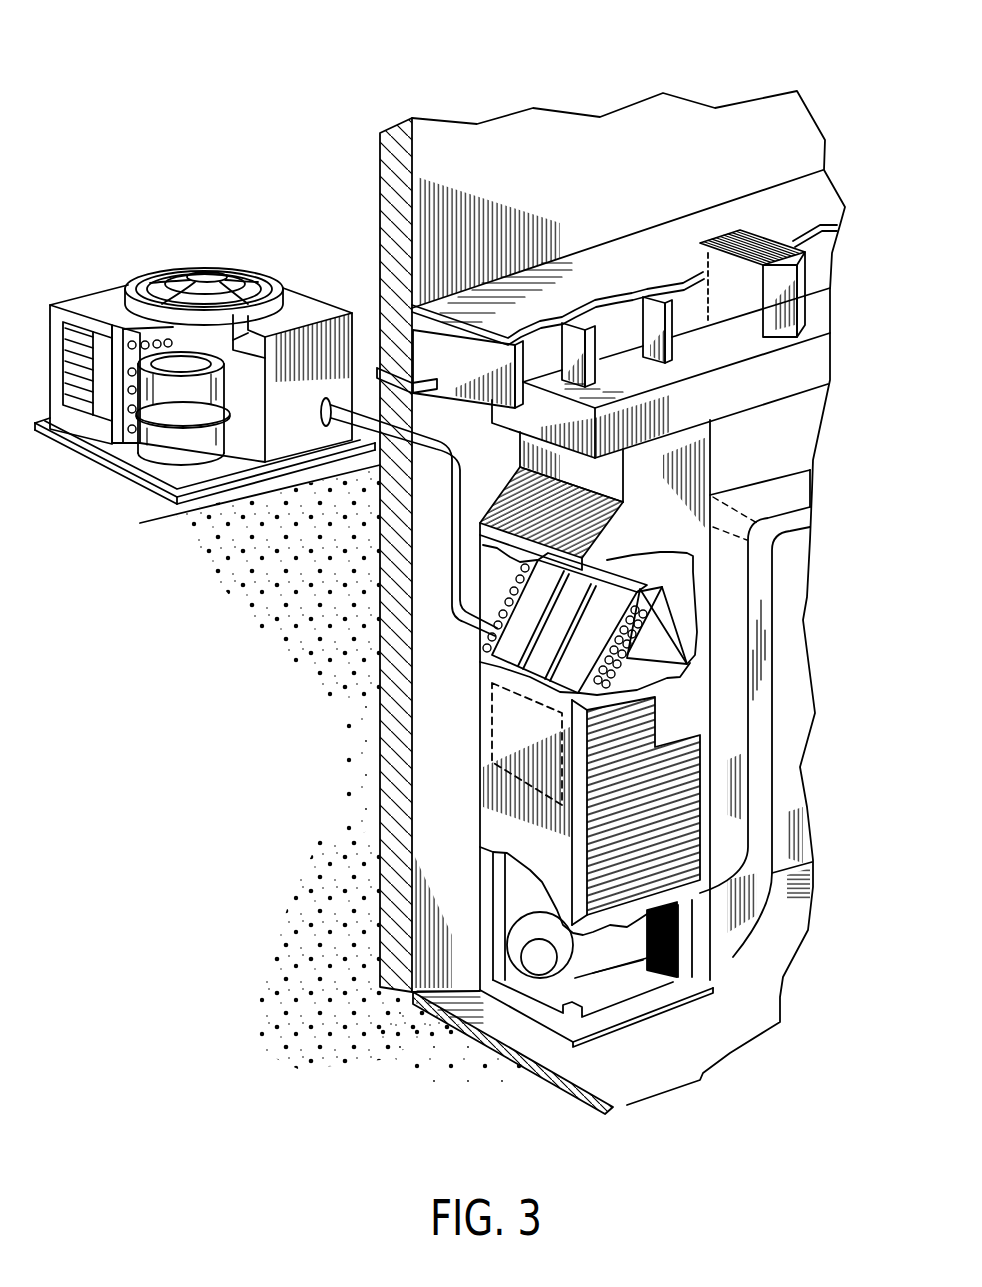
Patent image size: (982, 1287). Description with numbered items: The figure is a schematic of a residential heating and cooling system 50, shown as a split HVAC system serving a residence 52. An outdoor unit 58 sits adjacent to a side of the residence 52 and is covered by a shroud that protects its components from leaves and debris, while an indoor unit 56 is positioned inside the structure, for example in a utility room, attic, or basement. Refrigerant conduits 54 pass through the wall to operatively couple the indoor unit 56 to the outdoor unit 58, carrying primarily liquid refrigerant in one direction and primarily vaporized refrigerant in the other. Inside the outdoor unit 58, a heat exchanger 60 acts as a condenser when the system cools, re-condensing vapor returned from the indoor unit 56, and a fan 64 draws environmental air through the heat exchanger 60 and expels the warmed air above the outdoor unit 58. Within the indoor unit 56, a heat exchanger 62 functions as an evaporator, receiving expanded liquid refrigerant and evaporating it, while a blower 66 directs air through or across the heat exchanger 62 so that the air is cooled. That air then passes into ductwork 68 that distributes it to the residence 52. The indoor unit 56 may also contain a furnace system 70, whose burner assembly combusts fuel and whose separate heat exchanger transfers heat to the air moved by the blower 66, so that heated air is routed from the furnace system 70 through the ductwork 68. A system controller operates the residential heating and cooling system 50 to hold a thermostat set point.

The residential heating and cooling system 50 is at (200, 84).
The residence 52 is at (520, 140).
The refrigerant conduits 54 is at (450, 532).
The indoor unit 56 is at (456, 790).
The outdoor unit 58 is at (160, 257).
The heat exchanger 60 is at (133, 340).
The heat exchanger 62 is at (543, 653).
The fan 64 is at (227, 267).
The blower 66 is at (533, 983).
The ductwork 68 is at (778, 310).
The furnace system 70 is at (490, 735).